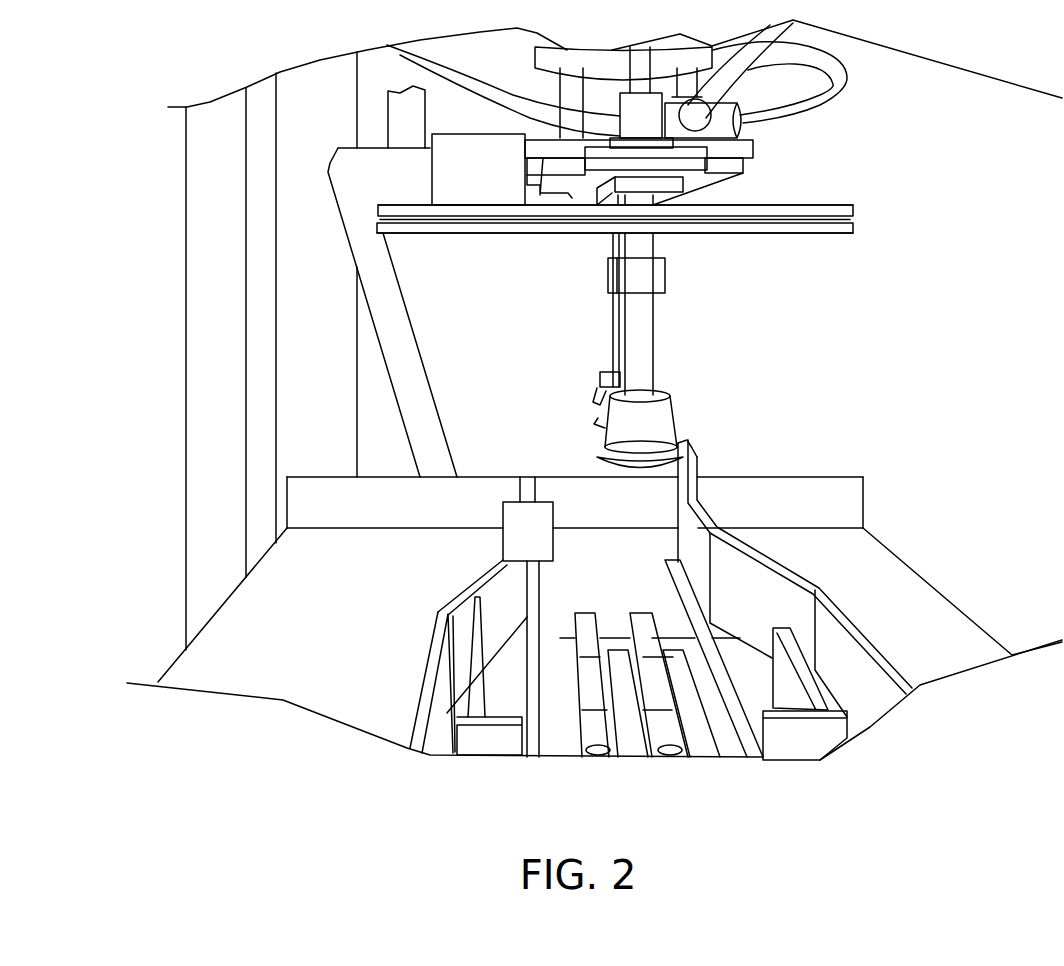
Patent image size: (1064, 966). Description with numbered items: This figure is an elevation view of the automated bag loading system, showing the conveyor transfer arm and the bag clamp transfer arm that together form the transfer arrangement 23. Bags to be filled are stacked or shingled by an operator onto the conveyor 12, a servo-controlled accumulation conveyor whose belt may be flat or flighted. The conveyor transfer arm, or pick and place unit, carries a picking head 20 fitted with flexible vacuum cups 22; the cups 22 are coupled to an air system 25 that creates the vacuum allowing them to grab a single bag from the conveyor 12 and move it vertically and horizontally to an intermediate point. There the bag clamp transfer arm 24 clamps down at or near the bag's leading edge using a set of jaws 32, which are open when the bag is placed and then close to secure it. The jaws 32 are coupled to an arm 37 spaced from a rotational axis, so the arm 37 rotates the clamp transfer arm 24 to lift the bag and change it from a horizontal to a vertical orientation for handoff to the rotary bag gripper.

The conveyor 12 is at (700, 698).
The picking head 20 is at (642, 275).
The flexible vacuum cups 22 is at (652, 427).
The transfer arrangement 23 is at (866, 218).
The bag clamp transfer arm 24 is at (772, 196).
The air system 25 is at (838, 75).
The jaws 32 is at (810, 203).
The arm 37 is at (413, 118).